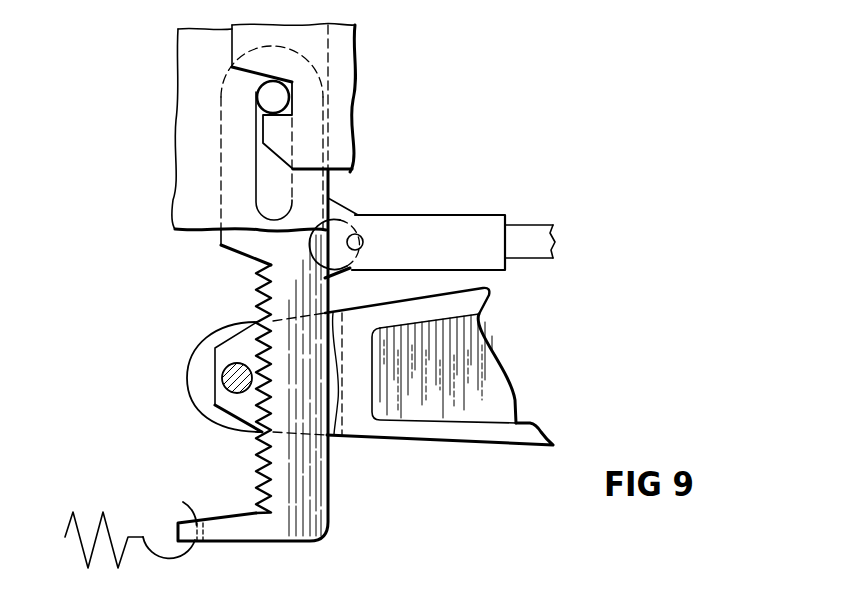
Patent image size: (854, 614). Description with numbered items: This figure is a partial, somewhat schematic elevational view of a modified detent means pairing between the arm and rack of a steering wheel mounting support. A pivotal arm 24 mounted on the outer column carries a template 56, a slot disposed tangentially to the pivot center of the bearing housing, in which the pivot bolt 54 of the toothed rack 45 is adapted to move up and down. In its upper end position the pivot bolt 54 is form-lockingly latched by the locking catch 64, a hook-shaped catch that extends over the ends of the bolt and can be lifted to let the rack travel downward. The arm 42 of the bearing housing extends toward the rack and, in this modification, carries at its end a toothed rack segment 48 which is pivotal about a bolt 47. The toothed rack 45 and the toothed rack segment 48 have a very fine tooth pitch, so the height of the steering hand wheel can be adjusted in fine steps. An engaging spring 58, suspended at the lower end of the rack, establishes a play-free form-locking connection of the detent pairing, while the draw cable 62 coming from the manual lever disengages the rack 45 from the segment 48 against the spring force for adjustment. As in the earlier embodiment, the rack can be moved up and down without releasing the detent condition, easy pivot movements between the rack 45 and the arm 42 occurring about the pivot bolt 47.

The pivotal arm 24 is at (193, 175).
The arm 42 is at (463, 373).
The toothed rack 45 is at (298, 502).
The pivot bolt 47 is at (238, 378).
The toothed rack segment 48 is at (237, 405).
The pivot bolt 54 is at (263, 93).
The template 56 is at (256, 186).
The engaging spring 58 is at (138, 536).
The draw cable 62 is at (520, 238).
The locking catch 64 is at (346, 177).